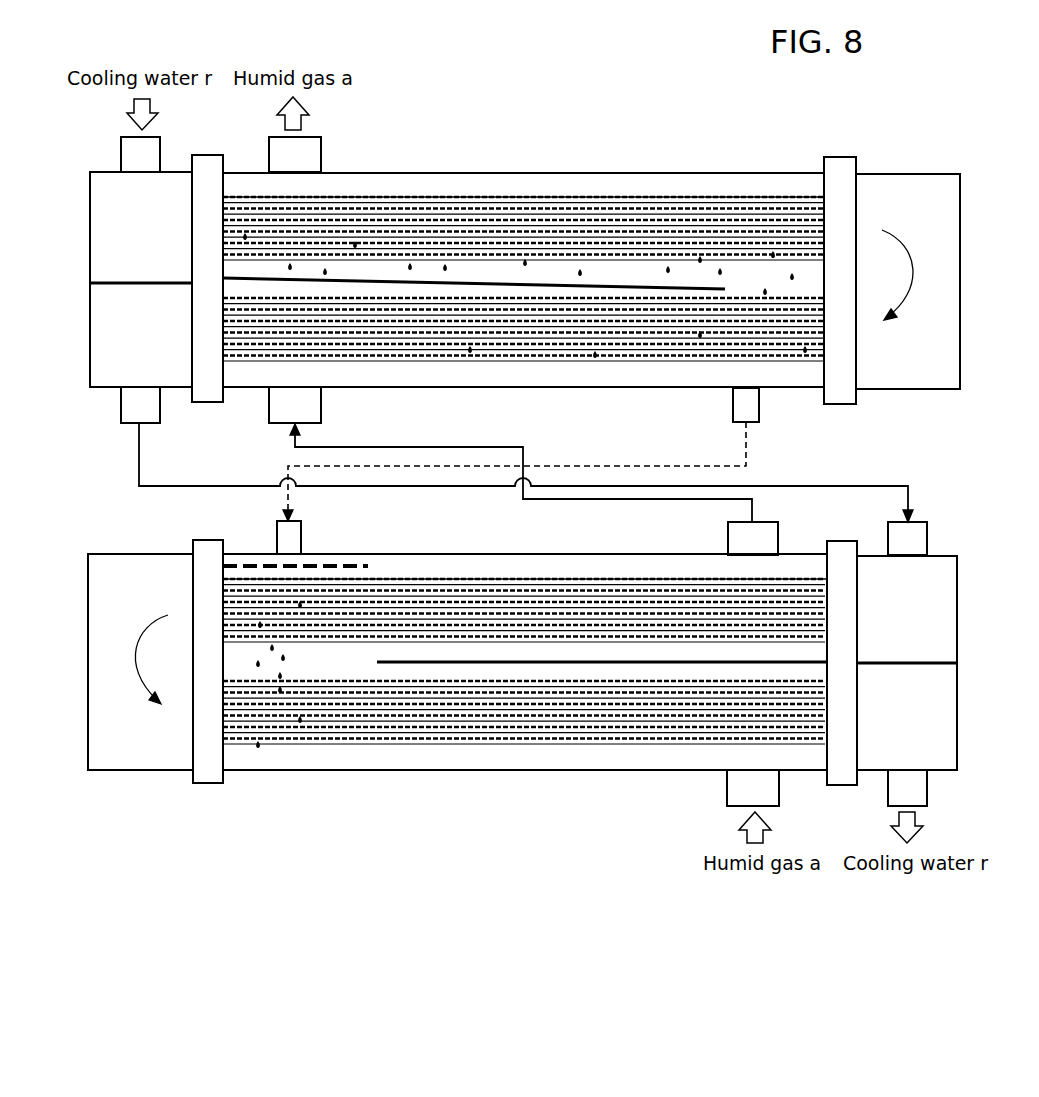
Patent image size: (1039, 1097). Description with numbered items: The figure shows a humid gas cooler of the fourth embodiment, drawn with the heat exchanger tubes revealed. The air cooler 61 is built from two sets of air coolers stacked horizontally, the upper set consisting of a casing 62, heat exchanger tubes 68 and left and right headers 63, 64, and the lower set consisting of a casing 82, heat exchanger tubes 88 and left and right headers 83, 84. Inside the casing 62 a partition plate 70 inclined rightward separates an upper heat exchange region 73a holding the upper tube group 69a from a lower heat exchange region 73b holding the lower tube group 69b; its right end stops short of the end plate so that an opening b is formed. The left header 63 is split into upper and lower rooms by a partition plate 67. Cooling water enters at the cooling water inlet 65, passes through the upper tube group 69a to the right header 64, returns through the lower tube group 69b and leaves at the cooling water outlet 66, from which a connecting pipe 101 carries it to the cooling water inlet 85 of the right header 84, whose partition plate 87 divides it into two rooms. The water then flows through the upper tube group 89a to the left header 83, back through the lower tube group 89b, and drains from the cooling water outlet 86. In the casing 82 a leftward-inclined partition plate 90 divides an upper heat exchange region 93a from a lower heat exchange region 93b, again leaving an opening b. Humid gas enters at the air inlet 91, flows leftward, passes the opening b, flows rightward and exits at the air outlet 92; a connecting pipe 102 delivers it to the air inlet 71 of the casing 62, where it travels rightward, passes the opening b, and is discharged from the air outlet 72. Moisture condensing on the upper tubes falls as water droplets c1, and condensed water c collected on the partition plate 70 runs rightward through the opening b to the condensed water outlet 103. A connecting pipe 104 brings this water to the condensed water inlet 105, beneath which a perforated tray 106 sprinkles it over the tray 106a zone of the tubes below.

The air cooler 61 is at (514, 118).
The casing 62 is at (523, 172).
The left header 63 is at (172, 172).
The right header 64 is at (897, 176).
The cooling water inlet 65 is at (121, 146).
The cooling water outlet 66 is at (121, 405).
The partition plate 67 is at (128, 283).
The heat exchanger tubes 68 is at (375, 195).
The upper tube group 69a is at (453, 190).
The lower tube group 69b is at (548, 372).
The partition plate 70 is at (238, 280).
The air inlet 71 is at (321, 410).
The air outlet 72 is at (321, 146).
The upper heat exchange region 73a is at (672, 192).
The lower heat exchange region 73b is at (445, 370).
The casing 82 is at (448, 772).
The left header 83 is at (101, 554).
The right header 84 is at (957, 605).
The cooling water inlet 85 is at (927, 522).
The cooling water outlet 86 is at (927, 797).
The partition plate 87 is at (898, 663).
The heat exchanger tubes 88 is at (432, 580).
The upper tube group 89a is at (539, 573).
The lower tube group 89b is at (540, 760).
The partition plate 90 is at (377, 663).
The air inlet 91 is at (779, 795).
The air outlet 92 is at (778, 530).
The upper heat exchange region 93a is at (608, 580).
The lower heat exchange region 93b is at (618, 760).
The connecting pipe 101 is at (208, 486).
The connecting pipe 102 is at (523, 500).
The condensed water outlet 103 is at (759, 408).
The connecting pipe 104 is at (650, 466).
The condensed water inlet 105 is at (301, 530).
The tray 106 is at (247, 564).
The tray 106a is at (348, 563).
The opening b is at (777, 277).
The condensed water c is at (741, 352).
The water droplets c1 is at (795, 278).